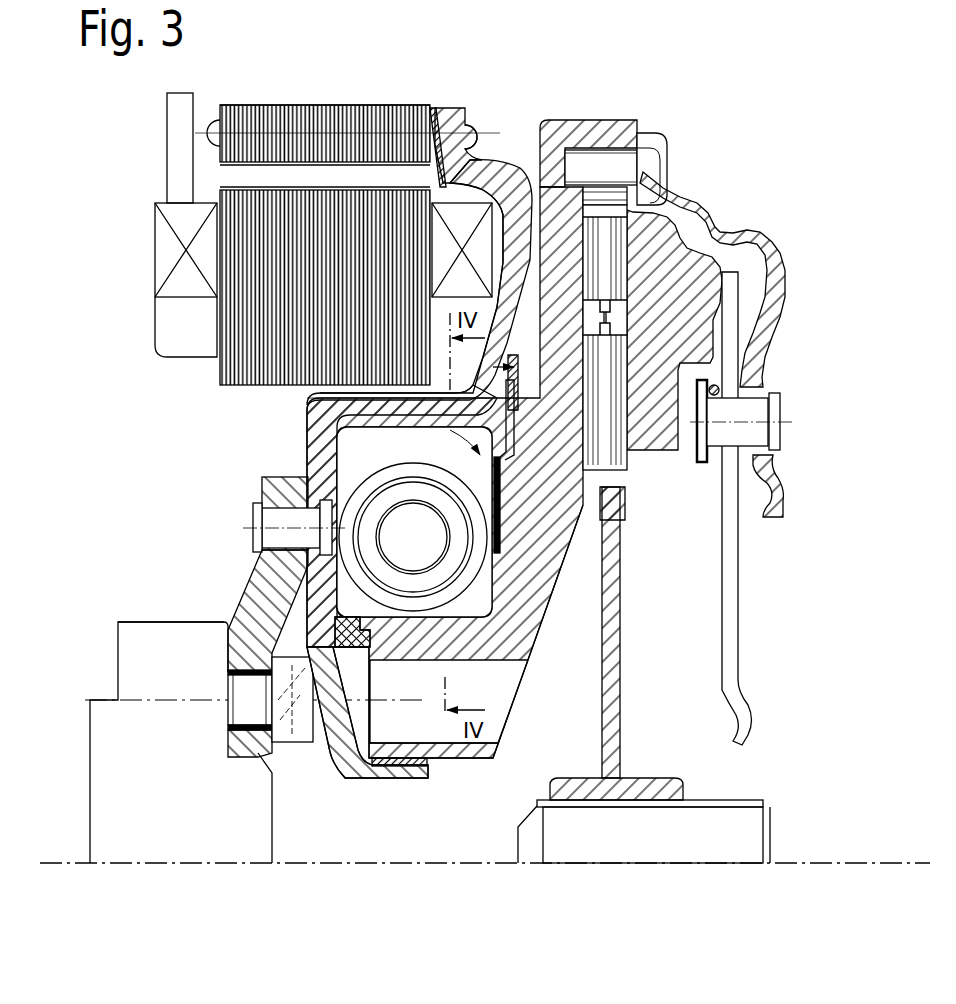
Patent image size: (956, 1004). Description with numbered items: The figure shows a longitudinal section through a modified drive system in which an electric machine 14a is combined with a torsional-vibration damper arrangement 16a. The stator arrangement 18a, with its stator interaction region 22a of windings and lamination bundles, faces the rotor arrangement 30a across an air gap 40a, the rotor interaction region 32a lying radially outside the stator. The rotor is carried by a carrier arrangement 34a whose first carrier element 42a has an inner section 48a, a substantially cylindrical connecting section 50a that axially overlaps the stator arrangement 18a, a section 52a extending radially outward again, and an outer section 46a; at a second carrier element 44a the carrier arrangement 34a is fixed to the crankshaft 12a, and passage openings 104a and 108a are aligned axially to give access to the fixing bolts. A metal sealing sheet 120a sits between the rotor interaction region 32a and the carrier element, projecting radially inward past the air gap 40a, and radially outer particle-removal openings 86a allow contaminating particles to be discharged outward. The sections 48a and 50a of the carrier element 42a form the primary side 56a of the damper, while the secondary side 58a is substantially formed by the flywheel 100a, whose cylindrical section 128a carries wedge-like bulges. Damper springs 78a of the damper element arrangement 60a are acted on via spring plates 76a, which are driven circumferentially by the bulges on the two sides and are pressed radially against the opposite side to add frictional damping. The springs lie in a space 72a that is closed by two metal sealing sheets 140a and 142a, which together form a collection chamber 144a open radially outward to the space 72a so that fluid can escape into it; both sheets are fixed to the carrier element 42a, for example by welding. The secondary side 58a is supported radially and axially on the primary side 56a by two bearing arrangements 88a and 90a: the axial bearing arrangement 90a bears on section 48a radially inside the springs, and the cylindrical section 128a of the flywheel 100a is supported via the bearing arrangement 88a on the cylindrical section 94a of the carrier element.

The crankshaft 12a is at (110, 755).
The electric machine 14a is at (189, 82).
The torsional-vibration damper arrangement 16a is at (546, 688).
The stator arrangement 18a is at (148, 298).
The stator interaction region 22a is at (255, 236).
The rotor arrangement 30a is at (376, 102).
The rotor interaction region 32a is at (300, 104).
The carrier arrangement 34a is at (514, 160).
The air gap 40a is at (255, 190).
The first carrier element 42a is at (545, 296).
The second carrier element 44a is at (260, 630).
The outer section 46a is at (456, 118).
The inner section 48a is at (312, 475).
The connecting section 50a is at (400, 415).
The section extending radially outward 52a is at (530, 300).
The primary side 56a is at (252, 557).
The secondary side 58a is at (552, 633).
The damper element arrangement 60a is at (480, 598).
The space 72a is at (585, 452).
The spring plates 76a is at (322, 432).
The damper springs 78a is at (227, 633).
The particle-removal openings 86a is at (518, 298).
The bearing arrangement 88a is at (440, 770).
The axial bearing arrangement 90a is at (268, 693).
The cylindrical section of the carrier element 94a is at (378, 772).
The flywheel 100a is at (590, 560).
The passage opening 104a is at (328, 688).
The passage opening 108a is at (485, 678).
The metal sealing sheet 120a is at (512, 148).
The cylindrical section 128a is at (350, 660).
The metal sealing sheet 140a is at (520, 460).
The metal sealing sheet 142a is at (600, 478).
The collection chamber 144a is at (702, 425).